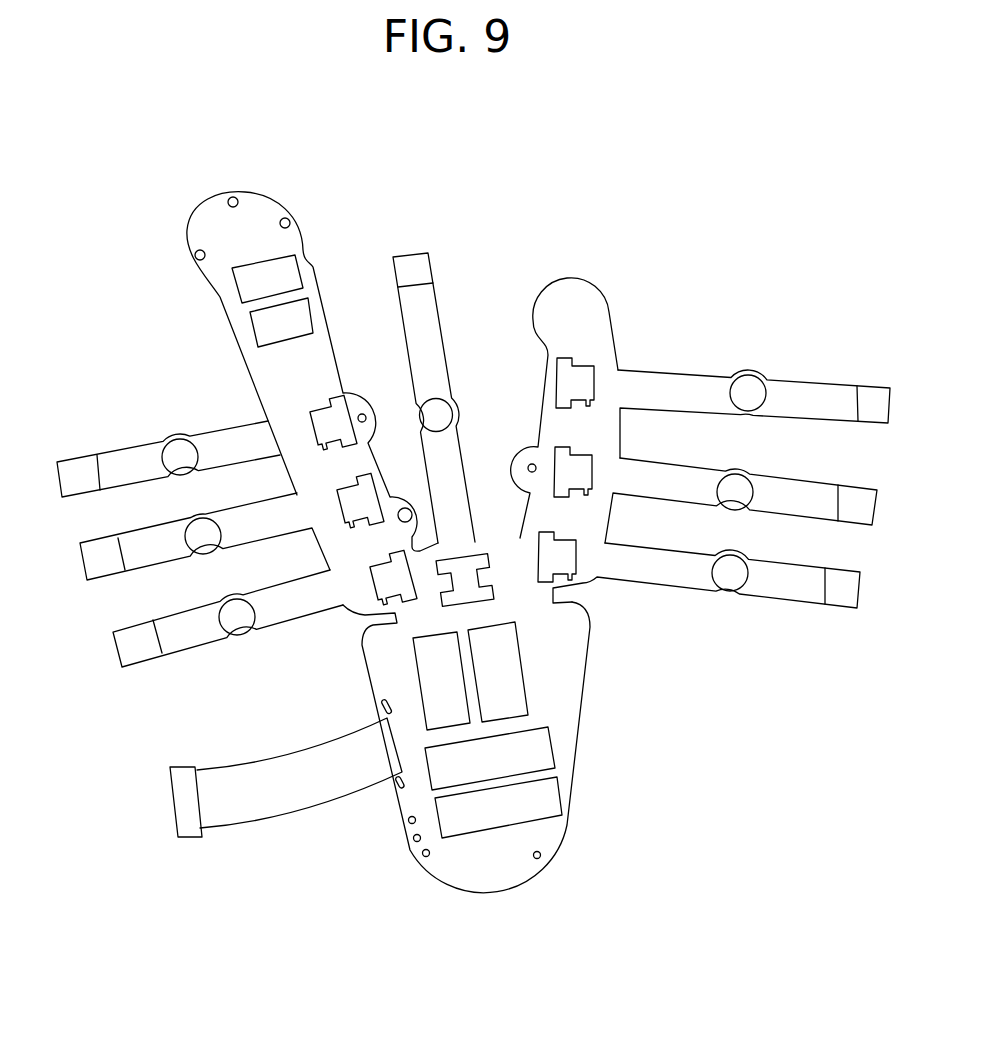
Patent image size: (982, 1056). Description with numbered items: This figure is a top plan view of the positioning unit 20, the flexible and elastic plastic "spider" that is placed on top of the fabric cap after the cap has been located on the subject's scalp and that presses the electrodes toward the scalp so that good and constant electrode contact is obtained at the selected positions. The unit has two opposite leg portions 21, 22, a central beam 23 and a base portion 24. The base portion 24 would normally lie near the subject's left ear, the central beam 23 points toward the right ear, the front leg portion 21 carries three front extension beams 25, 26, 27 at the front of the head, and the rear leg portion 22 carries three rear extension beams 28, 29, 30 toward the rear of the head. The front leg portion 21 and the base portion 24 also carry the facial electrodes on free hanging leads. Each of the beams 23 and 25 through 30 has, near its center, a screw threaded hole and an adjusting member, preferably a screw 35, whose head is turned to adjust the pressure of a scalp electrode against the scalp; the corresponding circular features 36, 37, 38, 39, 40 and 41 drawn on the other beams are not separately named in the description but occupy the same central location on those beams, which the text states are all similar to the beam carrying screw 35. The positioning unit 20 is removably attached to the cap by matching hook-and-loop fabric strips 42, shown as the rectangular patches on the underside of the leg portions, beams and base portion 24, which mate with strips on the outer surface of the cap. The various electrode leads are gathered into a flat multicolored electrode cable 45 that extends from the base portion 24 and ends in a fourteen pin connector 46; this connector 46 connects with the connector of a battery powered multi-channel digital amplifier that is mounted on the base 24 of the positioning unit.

The positioning unit 20 is at (610, 213).
The leg portion 21 is at (292, 240).
The leg portion 22 is at (590, 312).
The central beam 23 is at (427, 312).
The base portion 24 is at (567, 698).
The front beam 25 is at (105, 460).
The front beam 26 is at (127, 537).
The front beam 27 is at (160, 615).
The rear beam 28 is at (695, 383).
The rear beam 29 is at (665, 477).
The rear beam 30 is at (643, 560).
The screw 35 is at (182, 448).
The sensor opening 36 is at (198, 527).
The sensor opening 37 is at (237, 607).
The sensor opening 38 is at (448, 412).
The sensor opening 39 is at (757, 397).
The sensor opening 40 is at (748, 492).
The sensor opening 41 is at (743, 575).
The hook-and-loop fabric strip 42 is at (415, 260).
The electrode cable 45 is at (293, 770).
The connector 46 is at (185, 765).